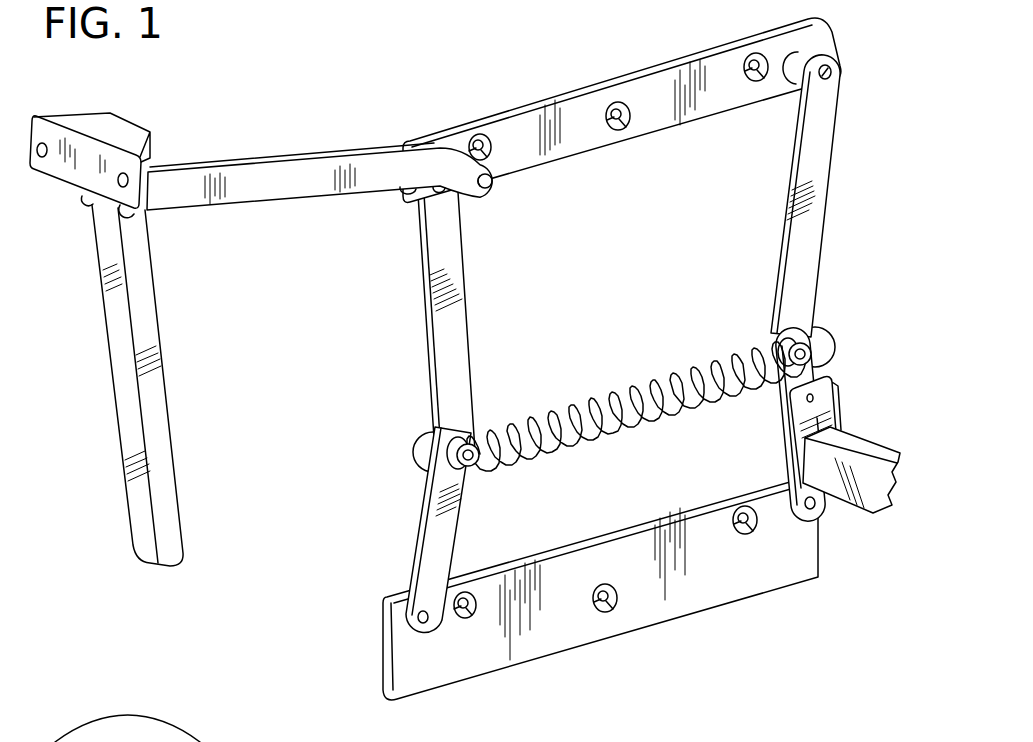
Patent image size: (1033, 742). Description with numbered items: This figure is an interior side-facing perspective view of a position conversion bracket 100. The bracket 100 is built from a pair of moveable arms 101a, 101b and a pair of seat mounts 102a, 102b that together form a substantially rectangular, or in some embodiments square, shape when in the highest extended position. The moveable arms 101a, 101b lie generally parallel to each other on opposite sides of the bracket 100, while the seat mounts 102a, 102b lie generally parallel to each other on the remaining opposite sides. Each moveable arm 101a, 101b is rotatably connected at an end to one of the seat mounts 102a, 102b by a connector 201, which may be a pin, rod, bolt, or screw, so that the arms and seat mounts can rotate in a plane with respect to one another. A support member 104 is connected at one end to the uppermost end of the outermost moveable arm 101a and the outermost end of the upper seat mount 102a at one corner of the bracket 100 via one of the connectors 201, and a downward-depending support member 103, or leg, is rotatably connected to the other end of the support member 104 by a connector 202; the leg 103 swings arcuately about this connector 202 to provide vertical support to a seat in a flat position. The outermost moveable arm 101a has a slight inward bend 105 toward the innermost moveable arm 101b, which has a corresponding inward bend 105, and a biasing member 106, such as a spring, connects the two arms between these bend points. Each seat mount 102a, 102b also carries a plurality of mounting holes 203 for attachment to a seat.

The position conversion bracket 100 is at (322, 55).
The outermost moveable arm 101a is at (457, 337).
The innermost moveable arm 101b is at (793, 243).
The upper seat mount 102a is at (570, 100).
The seat mount 102b is at (557, 657).
The downward-depending support member 103 is at (165, 437).
The support member 104 is at (220, 172).
The inward bend 105 is at (469, 447).
The biasing member 106 is at (653, 382).
The connector 201 is at (492, 195).
The connector 202 is at (132, 215).
The mounting holes 203 is at (478, 135).